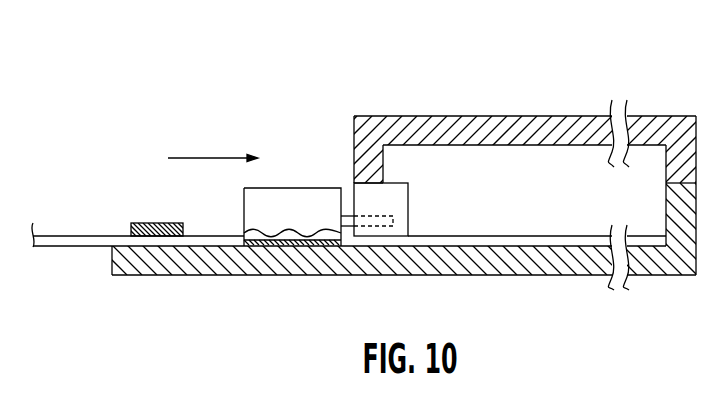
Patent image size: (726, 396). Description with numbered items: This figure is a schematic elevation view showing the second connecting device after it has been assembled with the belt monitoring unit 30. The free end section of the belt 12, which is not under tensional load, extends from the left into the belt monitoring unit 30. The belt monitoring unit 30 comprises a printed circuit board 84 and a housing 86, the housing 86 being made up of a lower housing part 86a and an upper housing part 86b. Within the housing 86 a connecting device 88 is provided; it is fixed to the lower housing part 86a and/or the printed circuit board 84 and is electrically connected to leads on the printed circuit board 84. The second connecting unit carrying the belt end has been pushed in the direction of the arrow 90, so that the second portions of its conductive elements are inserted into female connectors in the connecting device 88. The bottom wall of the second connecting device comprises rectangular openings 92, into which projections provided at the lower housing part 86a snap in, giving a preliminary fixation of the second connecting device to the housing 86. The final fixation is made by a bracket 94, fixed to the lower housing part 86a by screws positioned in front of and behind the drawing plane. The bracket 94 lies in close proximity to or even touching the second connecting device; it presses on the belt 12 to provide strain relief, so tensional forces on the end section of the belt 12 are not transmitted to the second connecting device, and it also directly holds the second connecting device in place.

The belt 12 is at (72, 246).
The belt monitoring unit 30 is at (422, 88).
The printed circuit board 84 is at (423, 240).
The housing 86 is at (670, 96).
The lower housing part 86a is at (483, 260).
The upper housing part 86b is at (517, 116).
The connecting device 88 is at (369, 229).
The arrow 90 is at (182, 157).
The rectangular openings 92 is at (312, 245).
The bracket 94 is at (146, 223).